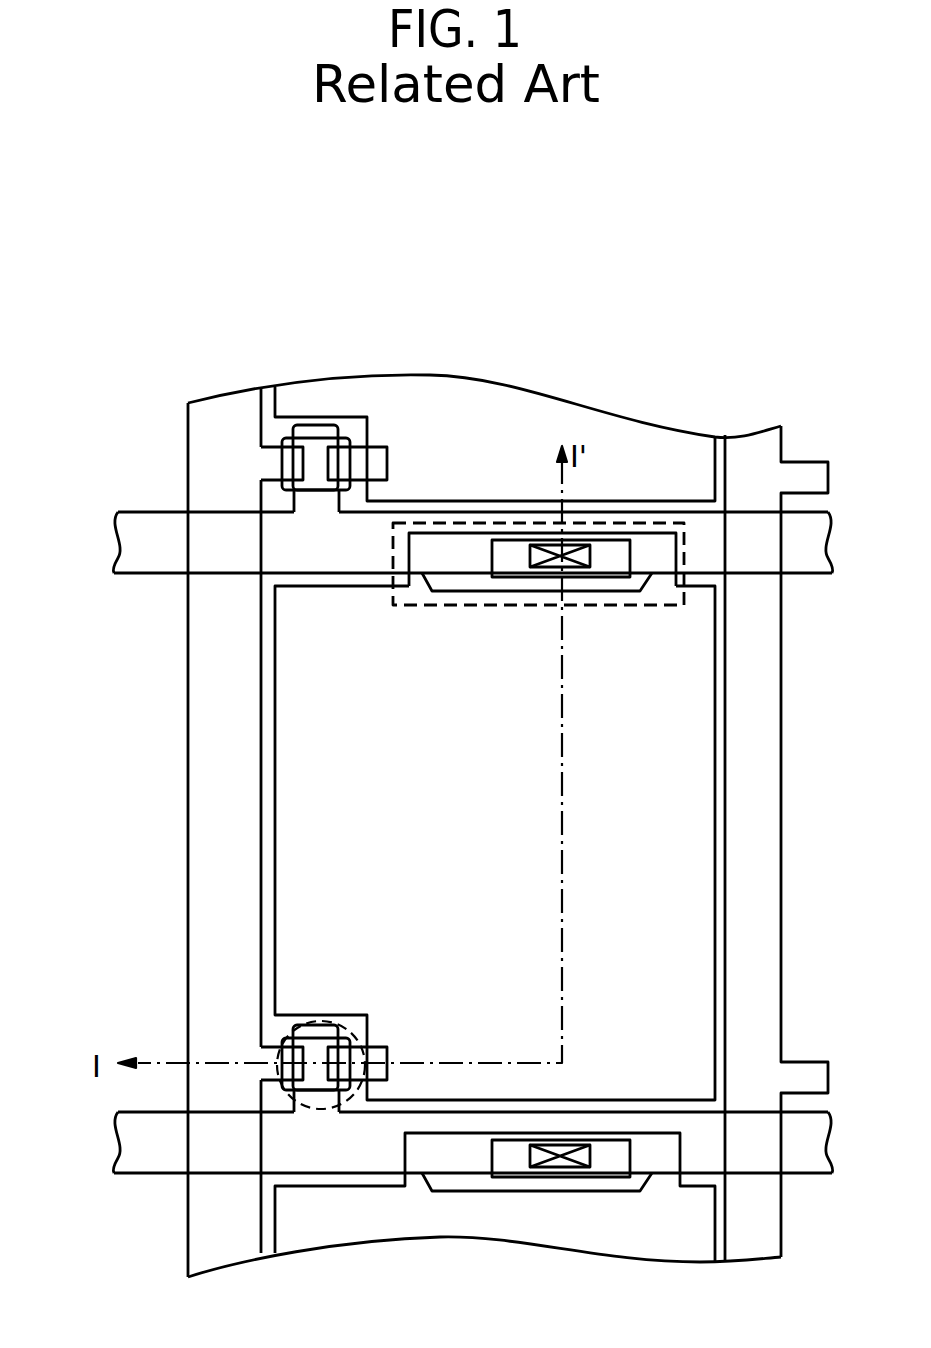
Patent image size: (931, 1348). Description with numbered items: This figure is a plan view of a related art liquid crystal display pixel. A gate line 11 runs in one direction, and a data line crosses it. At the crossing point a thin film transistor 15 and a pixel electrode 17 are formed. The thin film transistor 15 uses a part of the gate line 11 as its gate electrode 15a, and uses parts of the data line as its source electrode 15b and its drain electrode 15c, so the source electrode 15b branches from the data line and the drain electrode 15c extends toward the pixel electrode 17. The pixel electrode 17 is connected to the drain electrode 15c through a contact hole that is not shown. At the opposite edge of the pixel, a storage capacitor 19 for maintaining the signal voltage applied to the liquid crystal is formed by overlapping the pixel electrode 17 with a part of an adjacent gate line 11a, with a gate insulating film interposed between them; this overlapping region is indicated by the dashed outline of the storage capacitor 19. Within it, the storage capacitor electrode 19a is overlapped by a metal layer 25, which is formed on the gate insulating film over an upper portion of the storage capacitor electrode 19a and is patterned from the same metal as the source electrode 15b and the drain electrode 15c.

The gate line 11 is at (135, 1137).
The adjacent gate line 11a is at (134, 538).
The thin film transistor 15 is at (322, 1108).
The gate electrode 15a is at (322, 1030).
The source electrode 15b is at (270, 1058).
The drain electrode 15c is at (387, 1050).
The pixel electrode 17 is at (294, 891).
The storage capacitor 19 is at (653, 606).
The storage capacitor electrode 19a is at (498, 592).
The metal layer 25 is at (593, 580).